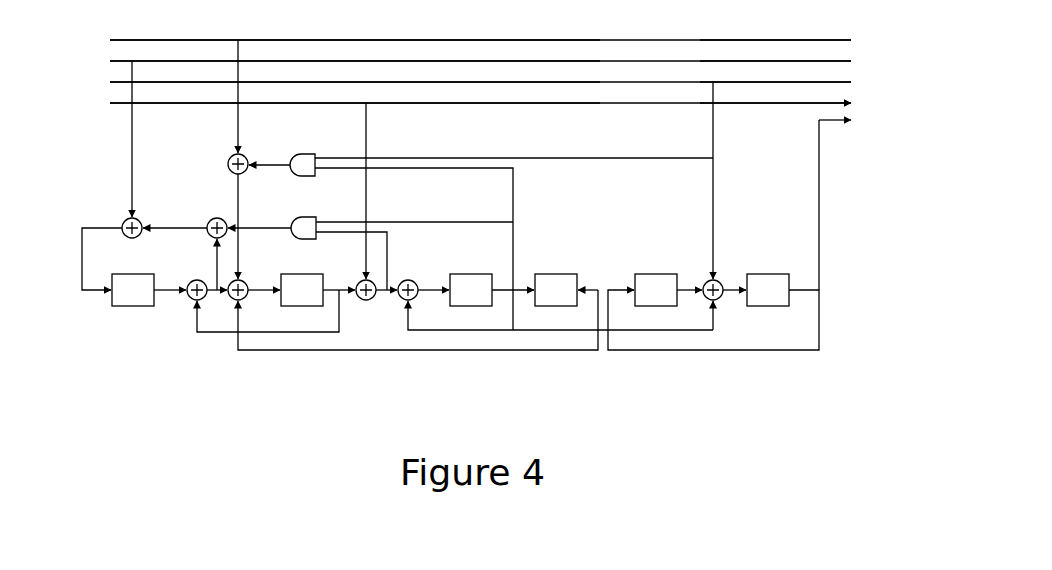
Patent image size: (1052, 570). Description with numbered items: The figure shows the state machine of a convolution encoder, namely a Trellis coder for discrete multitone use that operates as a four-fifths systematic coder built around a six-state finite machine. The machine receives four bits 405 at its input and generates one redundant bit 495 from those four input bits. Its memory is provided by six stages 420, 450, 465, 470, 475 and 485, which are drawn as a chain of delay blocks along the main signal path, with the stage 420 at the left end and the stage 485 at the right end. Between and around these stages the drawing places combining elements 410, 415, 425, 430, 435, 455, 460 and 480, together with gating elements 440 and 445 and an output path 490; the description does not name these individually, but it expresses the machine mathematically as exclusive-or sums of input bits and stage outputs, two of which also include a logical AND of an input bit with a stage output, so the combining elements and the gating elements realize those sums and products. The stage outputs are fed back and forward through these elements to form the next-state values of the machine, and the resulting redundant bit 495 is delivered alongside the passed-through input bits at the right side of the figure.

The four bits 405 is at (64, 72).
The modulo-2 adder 410 is at (126, 220).
The modulo-2 adder 415 is at (229, 160).
The stage 420 is at (134, 304).
The modulo-2 adder 425 is at (212, 220).
The modulo-2 adder 430 is at (186, 298).
The modulo-2 adder 435 is at (244, 281).
The AND gate 440 is at (302, 160).
The AND gate 445 is at (305, 221).
The stage 450 is at (308, 298).
The modulo-2 adder 455 is at (373, 299).
The modulo-2 adder 460 is at (416, 283).
The stage 465 is at (474, 305).
The stage 470 is at (565, 274).
The stage 475 is at (660, 305).
The modulo-2 adder 480 is at (706, 281).
The stage 485 is at (770, 274).
The parity output line u0 490 is at (822, 181).
The redundant bit 495 is at (880, 70).